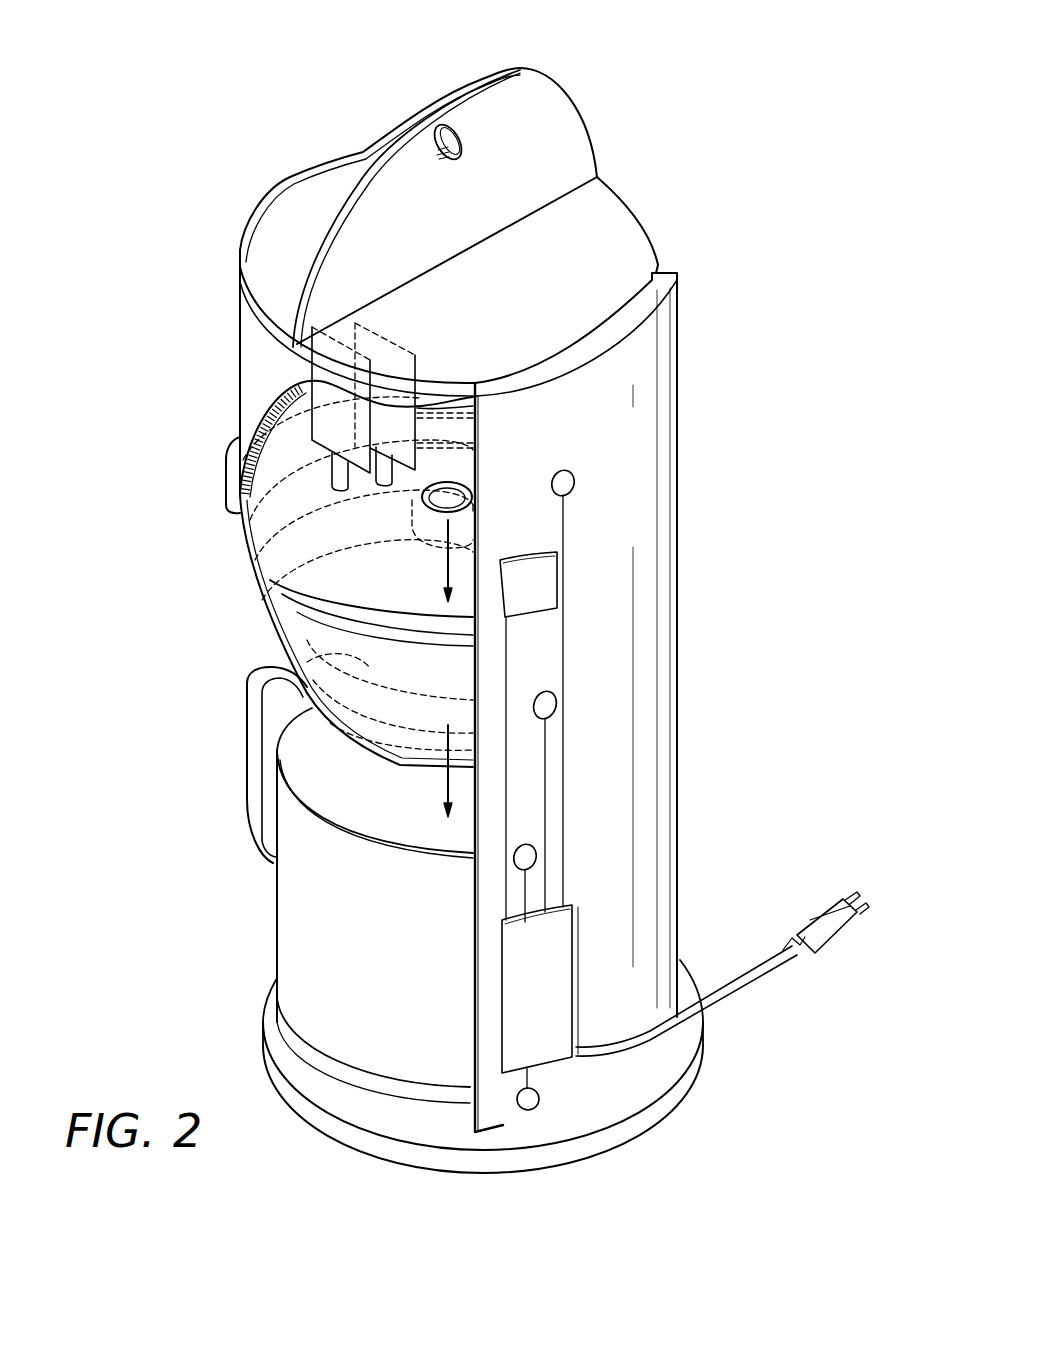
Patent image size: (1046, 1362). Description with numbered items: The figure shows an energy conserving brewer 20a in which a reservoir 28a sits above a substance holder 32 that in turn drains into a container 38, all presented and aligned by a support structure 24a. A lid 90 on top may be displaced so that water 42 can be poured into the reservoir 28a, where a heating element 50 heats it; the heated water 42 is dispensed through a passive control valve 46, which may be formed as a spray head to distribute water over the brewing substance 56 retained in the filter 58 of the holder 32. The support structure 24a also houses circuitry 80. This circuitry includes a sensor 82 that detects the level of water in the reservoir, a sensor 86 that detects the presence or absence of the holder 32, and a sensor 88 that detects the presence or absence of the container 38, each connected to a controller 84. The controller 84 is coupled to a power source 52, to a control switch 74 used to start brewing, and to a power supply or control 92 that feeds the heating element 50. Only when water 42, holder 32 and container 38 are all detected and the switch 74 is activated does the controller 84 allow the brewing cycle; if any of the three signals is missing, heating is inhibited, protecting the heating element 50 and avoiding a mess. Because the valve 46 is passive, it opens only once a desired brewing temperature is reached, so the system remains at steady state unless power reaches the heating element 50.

The brewer 20a is at (536, 622).
The support structure 24a is at (693, 328).
The reservoir 28a is at (213, 371).
The substance holder 32 is at (168, 454).
The container 38 is at (243, 750).
The water 42 is at (449, 176).
The passive control valve 46 is at (345, 530).
The heating element 50 is at (300, 362).
The power source 52 is at (822, 898).
The brewing substance 56 is at (307, 662).
The filter 58 is at (330, 605).
The control switch 74 is at (539, 1104).
The circuitry 80 is at (648, 785).
The sensor 82 is at (575, 483).
The controller 84 is at (605, 1027).
The sensor 86 is at (557, 706).
The sensor 88 is at (537, 860).
The lid 90 is at (572, 97).
The power supply or control 92 is at (537, 590).